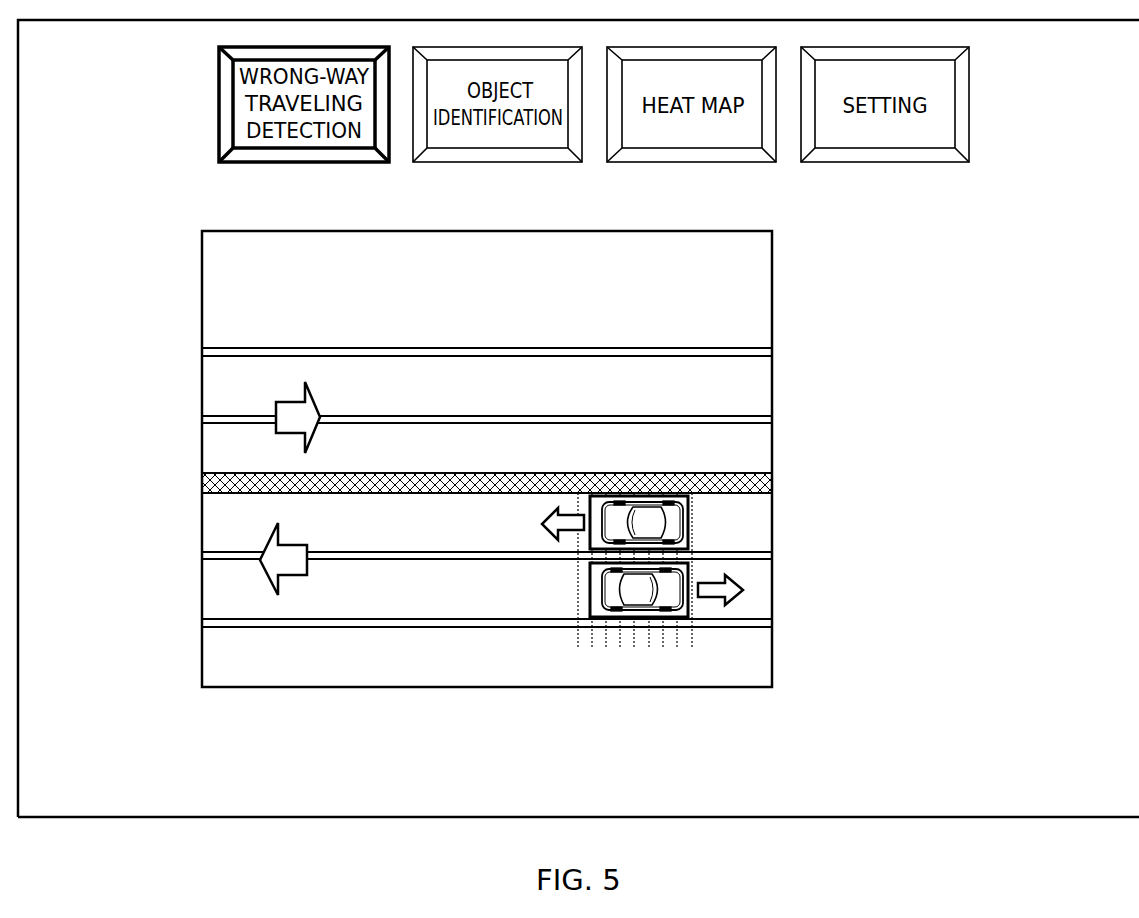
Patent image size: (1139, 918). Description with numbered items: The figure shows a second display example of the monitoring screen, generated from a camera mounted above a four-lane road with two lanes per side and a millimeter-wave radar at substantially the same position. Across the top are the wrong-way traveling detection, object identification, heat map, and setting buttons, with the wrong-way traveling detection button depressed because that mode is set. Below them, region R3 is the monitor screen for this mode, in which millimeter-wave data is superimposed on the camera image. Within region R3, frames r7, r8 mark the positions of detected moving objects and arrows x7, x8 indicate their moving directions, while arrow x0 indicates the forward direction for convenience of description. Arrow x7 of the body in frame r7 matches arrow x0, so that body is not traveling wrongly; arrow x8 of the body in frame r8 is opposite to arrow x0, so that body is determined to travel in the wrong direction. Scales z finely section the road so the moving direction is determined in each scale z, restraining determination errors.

The region R3 is at (772, 375).
The arrow x0 is at (300, 573).
The arrow x7 is at (546, 528).
The arrow x8 is at (728, 601).
The frame r7 is at (689, 522).
The frame r8 is at (684, 618).
The scales z is at (603, 652).